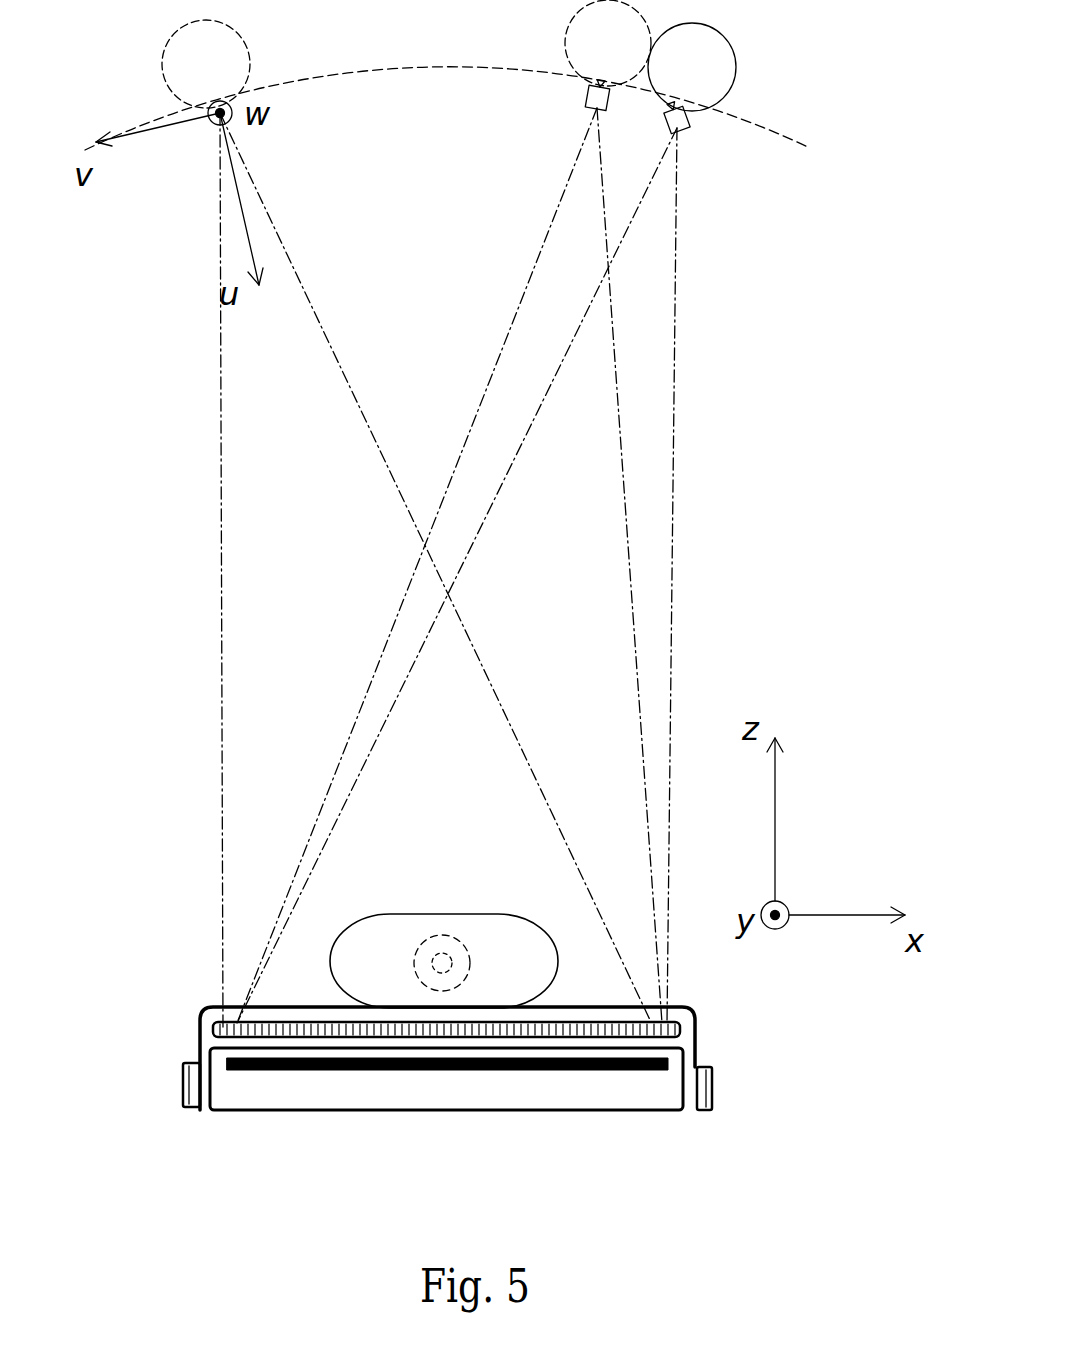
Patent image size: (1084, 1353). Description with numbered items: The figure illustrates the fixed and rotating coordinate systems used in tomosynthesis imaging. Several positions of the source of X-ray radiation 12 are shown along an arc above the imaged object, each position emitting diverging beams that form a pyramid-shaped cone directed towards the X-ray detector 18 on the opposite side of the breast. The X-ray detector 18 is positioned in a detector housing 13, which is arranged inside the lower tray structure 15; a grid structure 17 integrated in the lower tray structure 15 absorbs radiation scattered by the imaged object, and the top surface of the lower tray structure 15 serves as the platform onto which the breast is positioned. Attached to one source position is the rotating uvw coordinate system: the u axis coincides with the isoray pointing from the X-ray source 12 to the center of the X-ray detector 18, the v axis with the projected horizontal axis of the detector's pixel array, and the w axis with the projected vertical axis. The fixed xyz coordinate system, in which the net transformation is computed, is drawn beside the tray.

The source of X-ray radiation 12 is at (726, 58).
The detector housing 13 is at (677, 1080).
The lower tray structure 15 is at (690, 1012).
The grid structure 17 is at (215, 1028).
The X-ray detector 18 is at (227, 1070).